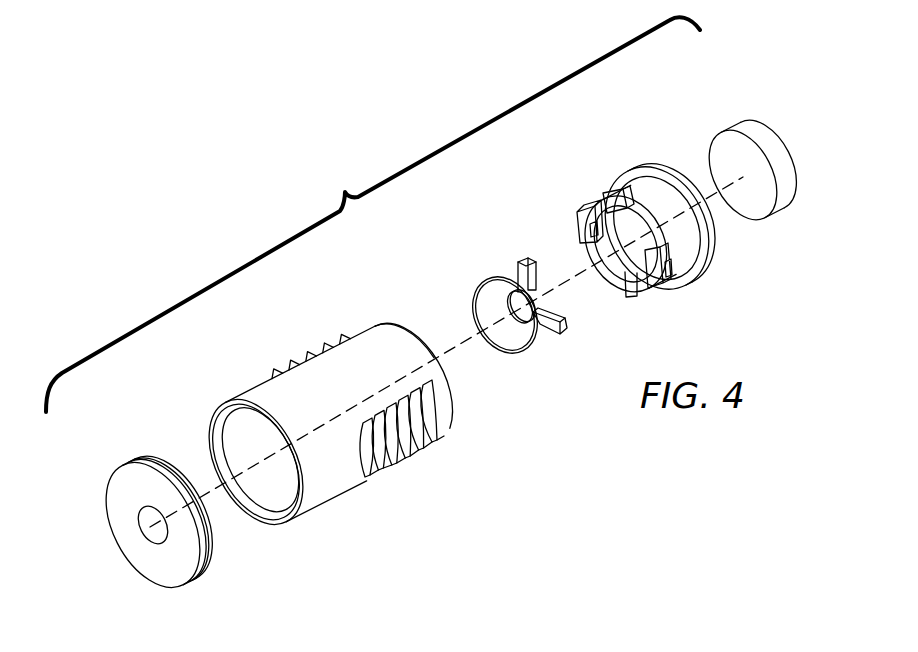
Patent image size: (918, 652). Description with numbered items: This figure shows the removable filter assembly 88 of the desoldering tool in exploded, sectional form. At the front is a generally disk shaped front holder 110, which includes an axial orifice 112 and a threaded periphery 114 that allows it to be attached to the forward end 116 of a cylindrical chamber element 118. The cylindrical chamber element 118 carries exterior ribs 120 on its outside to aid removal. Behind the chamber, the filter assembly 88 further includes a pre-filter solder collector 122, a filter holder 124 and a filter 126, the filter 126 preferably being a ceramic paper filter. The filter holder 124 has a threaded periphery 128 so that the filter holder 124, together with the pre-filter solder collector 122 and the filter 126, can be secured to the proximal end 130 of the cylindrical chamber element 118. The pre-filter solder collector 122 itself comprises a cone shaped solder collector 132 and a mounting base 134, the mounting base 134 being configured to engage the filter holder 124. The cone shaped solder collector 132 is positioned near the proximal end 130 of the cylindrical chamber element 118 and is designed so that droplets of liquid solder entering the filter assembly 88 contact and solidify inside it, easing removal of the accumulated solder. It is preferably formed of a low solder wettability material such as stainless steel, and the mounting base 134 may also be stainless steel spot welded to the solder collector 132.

The removable filter assembly 88 is at (373, 214).
The front holder 110 is at (173, 572).
The axial orifice 112 is at (145, 523).
The threaded periphery 114 is at (160, 458).
The forward end 116 is at (285, 523).
The cylindrical chamber element 118 is at (373, 365).
The exterior ribs 120 is at (410, 453).
The pre-filter solder collector 122 is at (516, 248).
The filter holder 124 is at (713, 268).
The filter 126 is at (783, 170).
The threaded periphery 128 is at (633, 173).
The proximal end 130 is at (452, 420).
The cone shaped solder collector 132 is at (512, 337).
The mounting base 134 is at (568, 328).